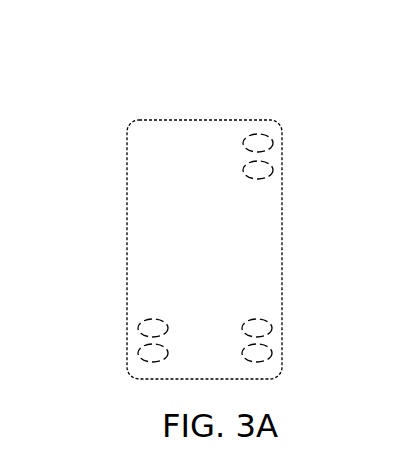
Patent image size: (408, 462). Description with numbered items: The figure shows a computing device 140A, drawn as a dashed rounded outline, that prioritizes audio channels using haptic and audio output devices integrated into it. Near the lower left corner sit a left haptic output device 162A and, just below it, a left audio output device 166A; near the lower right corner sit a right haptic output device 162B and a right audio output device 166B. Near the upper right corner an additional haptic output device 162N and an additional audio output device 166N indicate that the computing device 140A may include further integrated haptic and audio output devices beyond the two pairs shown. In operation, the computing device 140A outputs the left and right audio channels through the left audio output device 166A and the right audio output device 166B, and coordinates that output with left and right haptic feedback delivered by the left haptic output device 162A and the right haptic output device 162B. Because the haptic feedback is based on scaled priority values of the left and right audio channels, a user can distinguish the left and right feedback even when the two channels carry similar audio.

The computing device 140A is at (157, 55).
The haptic output device 162N is at (263, 141).
The audio output device 166N is at (263, 168).
The left haptic output device 162A is at (142, 328).
The left audio output device 166A is at (142, 353).
The right haptic output device 162B is at (263, 326).
The right audio output device 166B is at (263, 351).